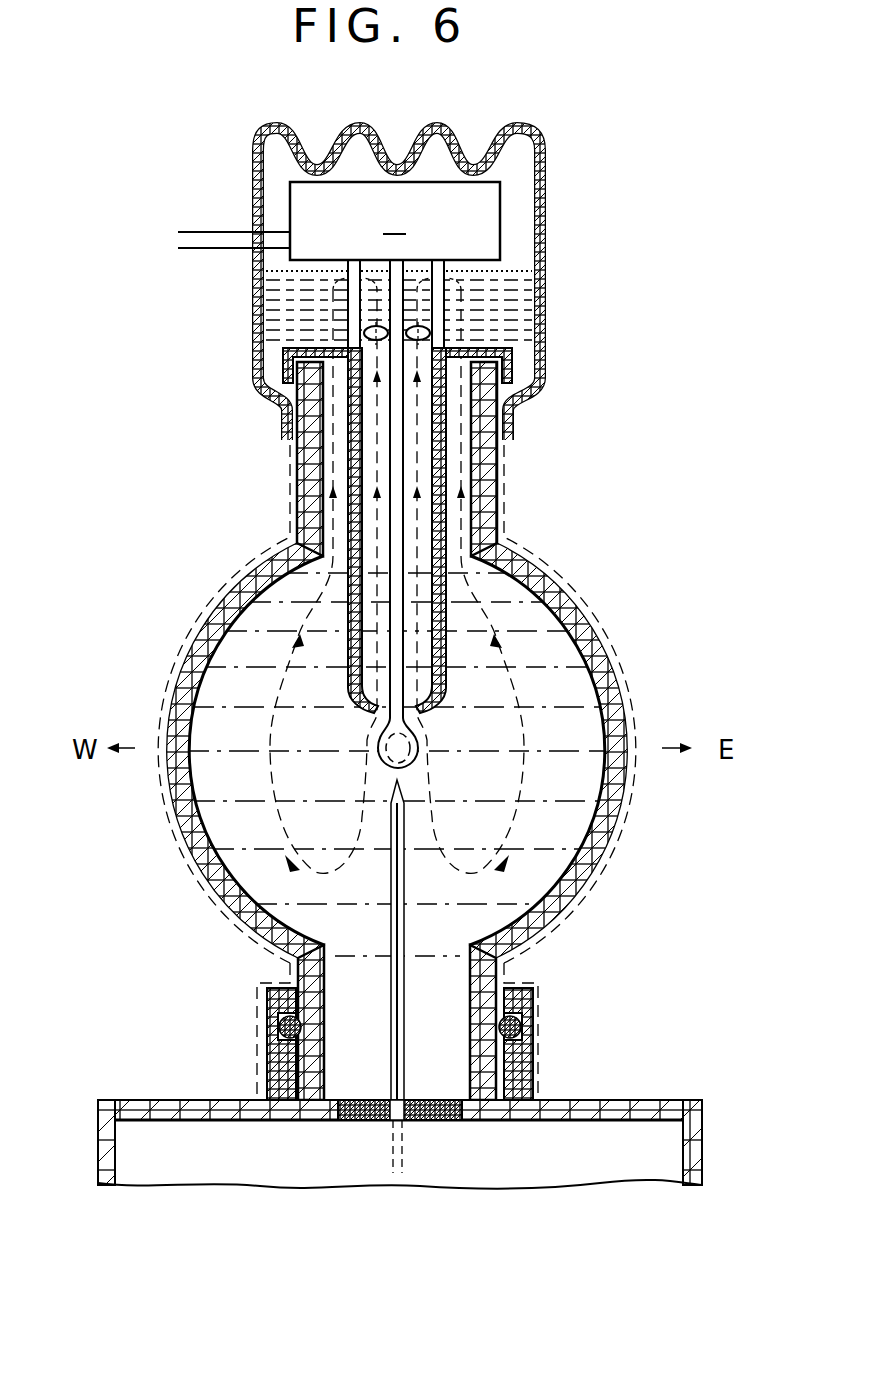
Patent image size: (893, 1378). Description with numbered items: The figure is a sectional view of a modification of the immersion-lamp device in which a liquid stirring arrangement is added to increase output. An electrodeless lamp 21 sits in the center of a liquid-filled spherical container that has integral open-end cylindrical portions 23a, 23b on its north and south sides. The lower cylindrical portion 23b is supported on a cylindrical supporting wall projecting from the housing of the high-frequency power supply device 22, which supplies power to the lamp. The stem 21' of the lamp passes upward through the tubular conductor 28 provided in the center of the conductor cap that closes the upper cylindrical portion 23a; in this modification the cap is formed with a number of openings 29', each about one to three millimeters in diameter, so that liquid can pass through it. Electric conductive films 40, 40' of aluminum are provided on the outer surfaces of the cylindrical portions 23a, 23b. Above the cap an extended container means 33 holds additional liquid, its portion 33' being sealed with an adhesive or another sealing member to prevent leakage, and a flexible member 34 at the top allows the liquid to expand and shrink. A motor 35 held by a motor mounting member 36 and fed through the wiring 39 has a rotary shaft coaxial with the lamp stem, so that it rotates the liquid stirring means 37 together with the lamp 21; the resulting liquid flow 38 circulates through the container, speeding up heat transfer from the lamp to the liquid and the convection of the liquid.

The electrodeless lamp 21 is at (443, 742).
The stem 21' is at (477, 716).
The high-frequency power supply device 22 is at (702, 1143).
The cylindrical portion 23a is at (312, 515).
The cylindrical portion 23b is at (490, 1068).
The tubular conductor 28 is at (440, 467).
The openings 29' is at (460, 351).
The extended container means 33 is at (456, 264).
The sealed portion of extended container means 33' is at (430, 409).
The flexible member 34 is at (281, 124).
The motor 35 is at (485, 210).
The motor mounting member 36 is at (352, 280).
The liquid stirring means 37 is at (418, 330).
The liquid flow 38 is at (520, 680).
The wiring of the motor 39 is at (167, 220).
The electric conductive film 40 is at (397, 704).
The electric conductive film 40' is at (357, 1031).